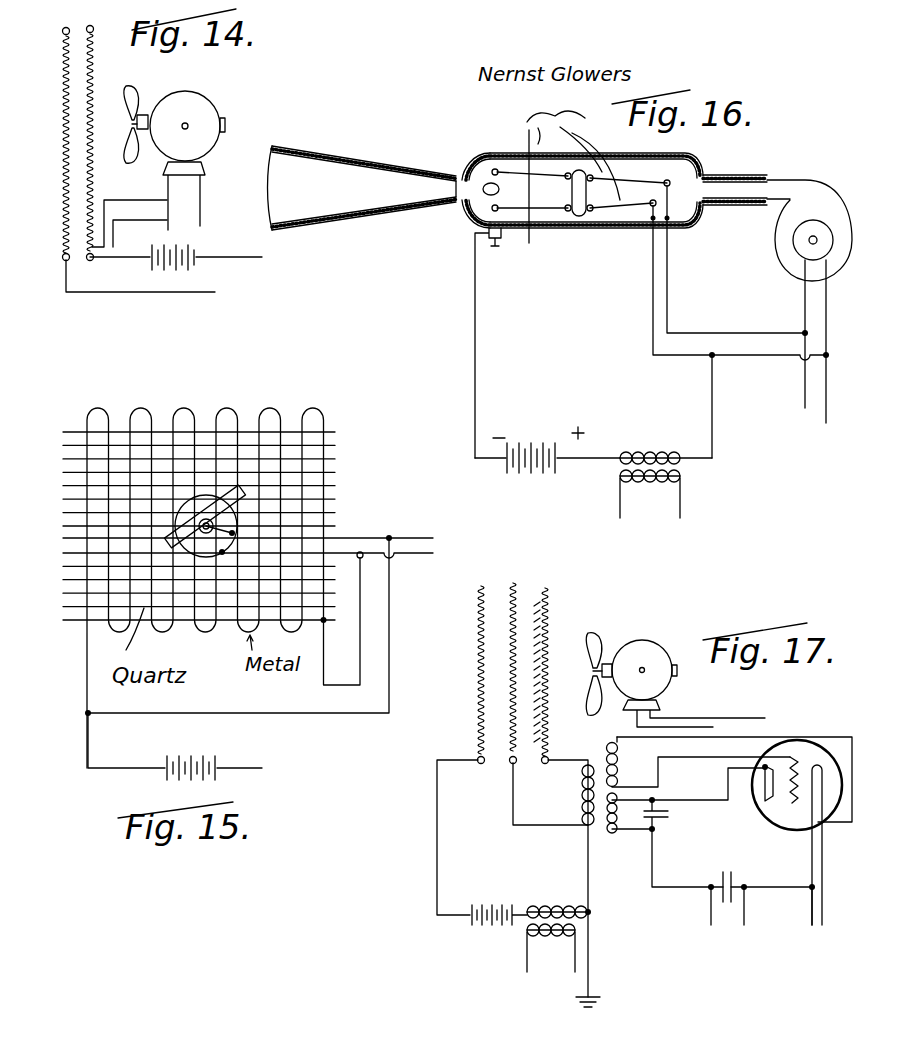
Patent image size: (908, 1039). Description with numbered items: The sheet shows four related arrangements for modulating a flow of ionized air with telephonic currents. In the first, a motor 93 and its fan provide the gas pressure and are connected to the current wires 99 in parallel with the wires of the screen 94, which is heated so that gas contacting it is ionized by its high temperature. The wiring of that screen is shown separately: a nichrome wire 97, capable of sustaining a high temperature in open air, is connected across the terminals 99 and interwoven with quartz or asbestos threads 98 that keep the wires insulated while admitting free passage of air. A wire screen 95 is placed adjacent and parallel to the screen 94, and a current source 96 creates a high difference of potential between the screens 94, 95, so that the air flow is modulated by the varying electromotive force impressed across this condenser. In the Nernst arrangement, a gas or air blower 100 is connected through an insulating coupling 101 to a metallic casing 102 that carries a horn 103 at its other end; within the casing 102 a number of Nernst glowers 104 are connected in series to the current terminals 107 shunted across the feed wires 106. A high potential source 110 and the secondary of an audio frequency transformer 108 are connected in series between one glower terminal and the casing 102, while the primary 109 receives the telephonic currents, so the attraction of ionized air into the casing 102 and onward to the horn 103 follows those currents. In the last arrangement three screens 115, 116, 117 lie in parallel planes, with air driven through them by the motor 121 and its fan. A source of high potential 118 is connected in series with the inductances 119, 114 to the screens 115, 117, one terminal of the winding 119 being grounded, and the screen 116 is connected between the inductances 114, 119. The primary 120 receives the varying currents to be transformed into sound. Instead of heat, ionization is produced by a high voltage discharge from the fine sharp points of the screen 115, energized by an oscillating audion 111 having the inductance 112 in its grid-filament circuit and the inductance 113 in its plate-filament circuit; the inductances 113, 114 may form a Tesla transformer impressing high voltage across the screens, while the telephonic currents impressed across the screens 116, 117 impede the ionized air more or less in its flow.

In FIG. 14, the motor 93 is at (203, 108).
In FIG. 14, the screen 94 is at (121, 62).
In FIG. 15, the screen 94 is at (312, 454).
In FIG. 14, the wire screen 95 is at (61, 68).
In FIG. 14, the current source 96 is at (209, 266).
In FIG. 15, the current source 96 is at (226, 770).
In FIG. 15, the nichrome wire 97 is at (329, 411).
In FIG. 15, the quartz or asbestos threads 98 is at (335, 492).
In FIG. 14, the current wires 99 is at (147, 223).
In FIG. 15, the current wires 99 is at (269, 651).
In FIG. 16, the gas or air blower 100 is at (790, 248).
In FIG. 16, the insulating coupling 101 is at (753, 181).
In FIG. 16, the metallic casing 102 is at (580, 232).
In FIG. 16, the horn 103 is at (362, 202).
In FIG. 16, the Nernst glowers 104 is at (524, 228).
In FIG. 16, the feed wires 106 is at (822, 412).
In FIG. 16, the current terminals 107 is at (779, 368).
In FIG. 16, the audio frequency transformer secondary 108 is at (665, 452).
In FIG. 16, the audio frequency transformer primary 109 is at (658, 485).
In FIG. 16, the high potential source 110 is at (546, 442).
In FIG. 17, the audion 111 is at (776, 812).
In FIG. 17, the inductance 112 is at (620, 762).
In FIG. 17, the inductance 113 is at (616, 832).
In FIG. 17, the inductance 114 is at (578, 810).
In FIG. 17, the screen 115 is at (559, 611).
In FIG. 17, the screen 116 is at (522, 586).
In FIG. 17, the screen 117 is at (473, 713).
In FIG. 17, the source of high potential 118 is at (495, 900).
In FIG. 17, the inductance 119 is at (558, 900).
In FIG. 17, the primary 120 is at (550, 938).
In FIG. 17, the motor 121 is at (650, 660).